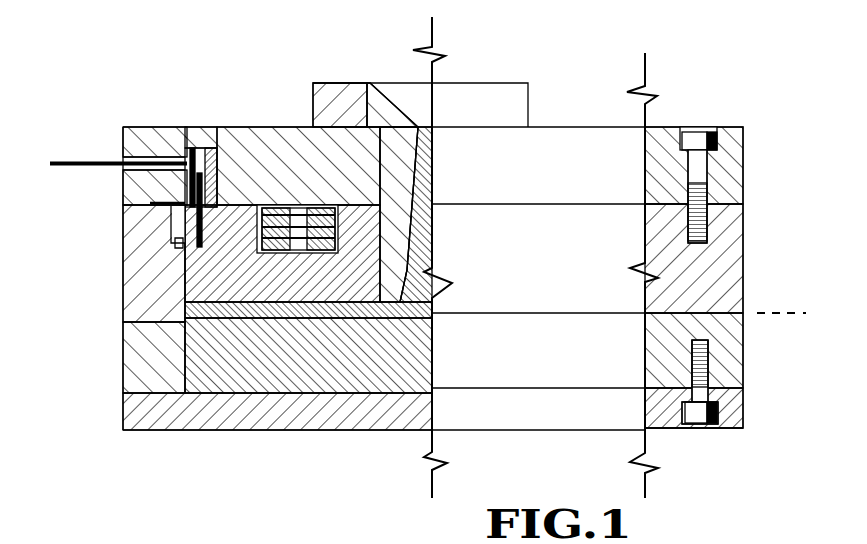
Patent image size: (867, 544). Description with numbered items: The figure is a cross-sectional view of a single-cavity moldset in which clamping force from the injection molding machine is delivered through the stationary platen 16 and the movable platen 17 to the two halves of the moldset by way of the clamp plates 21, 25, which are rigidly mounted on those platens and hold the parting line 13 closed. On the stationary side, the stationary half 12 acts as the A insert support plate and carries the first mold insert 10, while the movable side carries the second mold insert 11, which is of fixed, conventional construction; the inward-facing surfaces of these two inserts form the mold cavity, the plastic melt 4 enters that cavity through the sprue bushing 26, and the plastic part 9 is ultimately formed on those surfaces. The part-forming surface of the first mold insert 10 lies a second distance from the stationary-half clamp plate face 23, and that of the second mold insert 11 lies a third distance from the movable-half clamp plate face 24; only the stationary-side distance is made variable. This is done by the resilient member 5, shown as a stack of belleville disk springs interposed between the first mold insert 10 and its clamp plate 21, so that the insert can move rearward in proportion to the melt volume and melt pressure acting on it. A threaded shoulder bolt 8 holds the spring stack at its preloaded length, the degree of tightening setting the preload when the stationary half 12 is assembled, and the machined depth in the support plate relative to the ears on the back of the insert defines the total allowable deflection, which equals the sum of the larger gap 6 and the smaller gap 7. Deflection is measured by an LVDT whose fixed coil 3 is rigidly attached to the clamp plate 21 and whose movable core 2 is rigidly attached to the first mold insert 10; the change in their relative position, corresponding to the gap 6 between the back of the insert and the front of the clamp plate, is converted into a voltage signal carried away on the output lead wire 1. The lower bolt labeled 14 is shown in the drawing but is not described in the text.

The output lead wire 1 is at (110, 163).
The movable core 2 is at (165, 153).
The fixed coil 3 is at (213, 150).
The plastic melt 4 is at (422, 120).
The resilient member 5 is at (310, 207).
The gap 6 is at (165, 203).
The gap 7 is at (173, 242).
The shoulder bolt 8 is at (697, 183).
The plastic part 9 is at (185, 302).
The first mold insert 10 is at (185, 272).
The second mold insert 11 is at (185, 360).
The stationary half 12 is at (718, 248).
The parting line 13 is at (795, 312).
The lower bolt 14 is at (712, 375).
The stationary platen 16 is at (735, 87).
The movable platen 17 is at (758, 478).
The clamp plate 21 is at (735, 147).
The stationary-half clamp plate face 23 is at (148, 205).
The movable-half clamp plate face 24 is at (140, 392).
The clamp plate 25 is at (745, 410).
The sprue bushing 26 is at (355, 100).